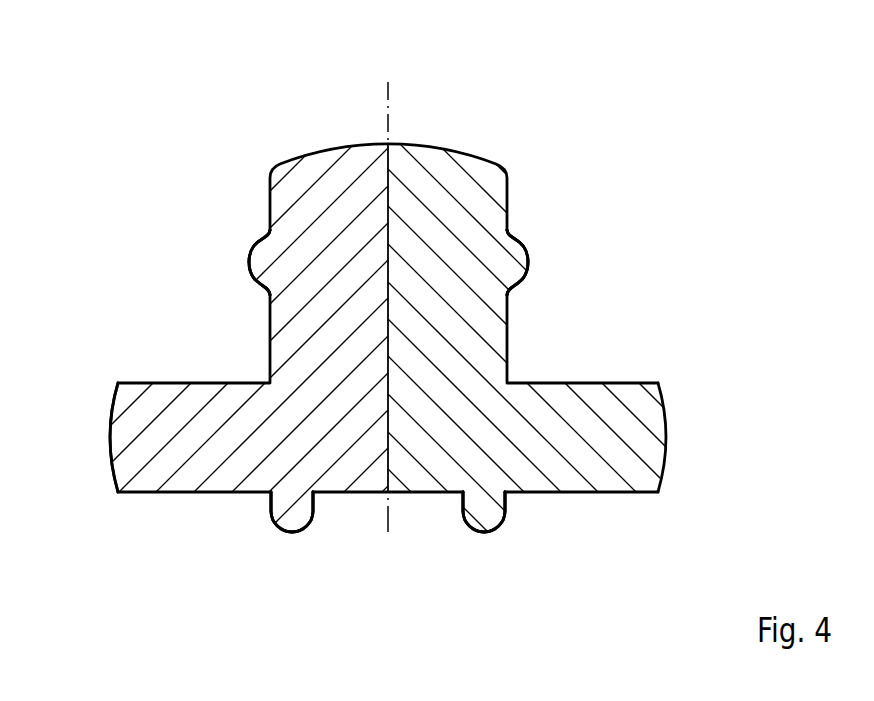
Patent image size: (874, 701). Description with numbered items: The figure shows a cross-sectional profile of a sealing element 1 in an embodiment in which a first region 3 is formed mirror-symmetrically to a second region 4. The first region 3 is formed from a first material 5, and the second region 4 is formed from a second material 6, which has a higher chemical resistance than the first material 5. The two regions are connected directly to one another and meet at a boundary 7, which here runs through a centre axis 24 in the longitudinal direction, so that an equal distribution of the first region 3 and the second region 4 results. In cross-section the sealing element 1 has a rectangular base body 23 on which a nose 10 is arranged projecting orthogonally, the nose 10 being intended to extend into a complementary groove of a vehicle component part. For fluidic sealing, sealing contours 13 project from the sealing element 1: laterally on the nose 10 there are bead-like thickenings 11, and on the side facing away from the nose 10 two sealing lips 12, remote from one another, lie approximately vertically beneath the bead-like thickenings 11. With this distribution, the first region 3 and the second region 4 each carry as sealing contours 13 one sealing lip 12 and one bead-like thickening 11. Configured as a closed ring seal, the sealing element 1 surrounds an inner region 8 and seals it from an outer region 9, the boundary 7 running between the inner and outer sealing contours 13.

The sealing element 1 is at (178, 157).
The first region 3 is at (194, 292).
The second region 4 is at (631, 292).
The first material 5 is at (192, 484).
The second material 6 is at (580, 484).
The boundary 7 is at (388, 200).
The inner region 8 is at (739, 373).
The outer region 9 is at (66, 387).
The nose 10 is at (440, 185).
The bead-like thickening 11 is at (262, 265).
The sealing lip 12 is at (292, 522).
The sealing contour 13 is at (388, 381).
The base body 23 is at (128, 440).
The centre axis 24 is at (388, 88).